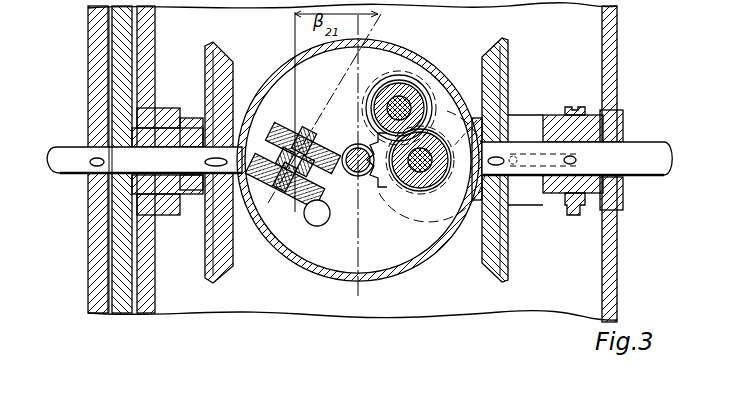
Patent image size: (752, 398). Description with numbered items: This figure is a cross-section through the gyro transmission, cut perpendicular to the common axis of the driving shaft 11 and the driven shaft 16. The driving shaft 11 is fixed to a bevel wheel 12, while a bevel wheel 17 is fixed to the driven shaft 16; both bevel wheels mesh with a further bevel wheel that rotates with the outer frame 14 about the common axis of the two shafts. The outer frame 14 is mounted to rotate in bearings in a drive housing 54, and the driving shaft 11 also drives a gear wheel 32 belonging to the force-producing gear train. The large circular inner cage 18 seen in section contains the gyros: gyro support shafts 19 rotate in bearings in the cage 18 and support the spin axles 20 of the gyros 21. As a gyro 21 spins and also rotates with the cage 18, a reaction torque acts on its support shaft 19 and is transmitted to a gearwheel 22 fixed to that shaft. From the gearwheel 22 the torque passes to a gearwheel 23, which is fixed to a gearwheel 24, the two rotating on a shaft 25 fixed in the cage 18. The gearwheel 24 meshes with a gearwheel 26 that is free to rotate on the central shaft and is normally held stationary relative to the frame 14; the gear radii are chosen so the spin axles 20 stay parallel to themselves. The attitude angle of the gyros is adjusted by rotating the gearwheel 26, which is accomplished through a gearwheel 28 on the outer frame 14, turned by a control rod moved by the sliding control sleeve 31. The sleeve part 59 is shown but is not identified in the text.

The driving shaft 11 is at (160, 171).
The bevel wheel 12 is at (220, 62).
The outer frame 14 is at (554, 130).
The driven shaft 16 is at (609, 171).
The bevel wheel 17 is at (486, 80).
The inner cage 18 is at (293, 248).
The gyro support shaft 19 is at (290, 156).
The spin axle 20 is at (311, 150).
The gyro 21 is at (283, 123).
The gearwheel 22 is at (410, 190).
The gearwheel 23 is at (400, 85).
The gearwheel 24 is at (385, 90).
The shaft 25 is at (420, 93).
The gearwheel 26 is at (378, 176).
The gearwheel 28 is at (477, 197).
The control sleeve 31 is at (570, 212).
The gear wheel 32 is at (102, 34).
The drive housing 54 is at (150, 101).
The sleeve 59 is at (128, 62).